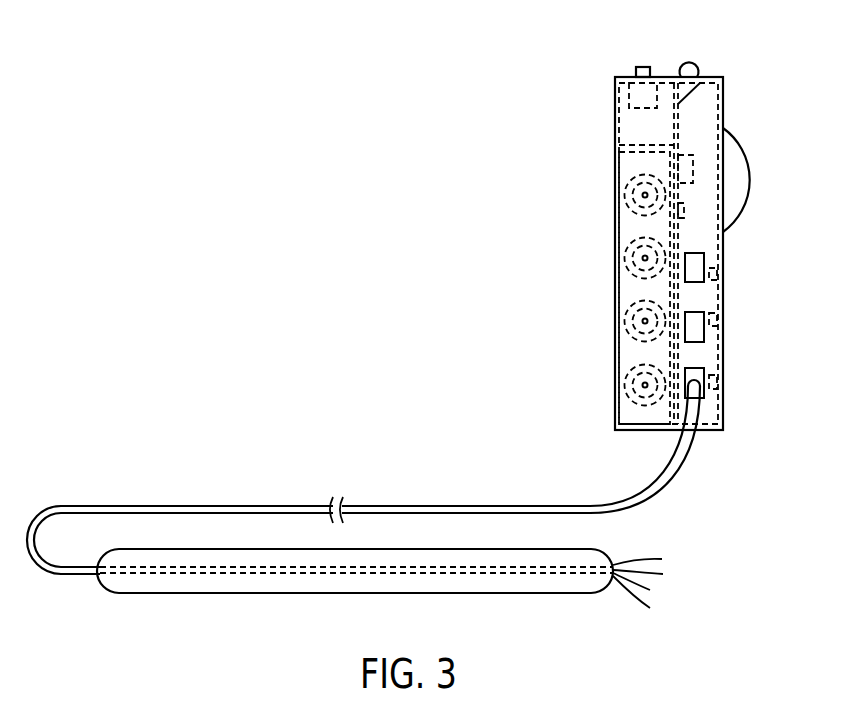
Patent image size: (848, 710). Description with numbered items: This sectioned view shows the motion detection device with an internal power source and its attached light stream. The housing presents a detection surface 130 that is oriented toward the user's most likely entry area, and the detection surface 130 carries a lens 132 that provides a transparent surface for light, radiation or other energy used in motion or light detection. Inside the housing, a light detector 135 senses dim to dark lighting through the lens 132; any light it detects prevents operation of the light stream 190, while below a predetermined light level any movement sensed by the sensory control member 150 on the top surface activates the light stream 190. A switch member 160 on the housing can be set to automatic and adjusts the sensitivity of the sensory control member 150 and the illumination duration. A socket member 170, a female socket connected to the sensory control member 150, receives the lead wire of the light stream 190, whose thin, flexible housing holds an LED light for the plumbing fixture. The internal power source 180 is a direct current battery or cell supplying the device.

The detection surface 130 is at (724, 99).
The lens 132 is at (748, 168).
The light detector 135 is at (688, 163).
The sensory control member 150 is at (689, 59).
The switch member 160 is at (644, 65).
The socket member 170 is at (700, 378).
The power source 180 is at (618, 220).
The light stream 190 is at (608, 553).